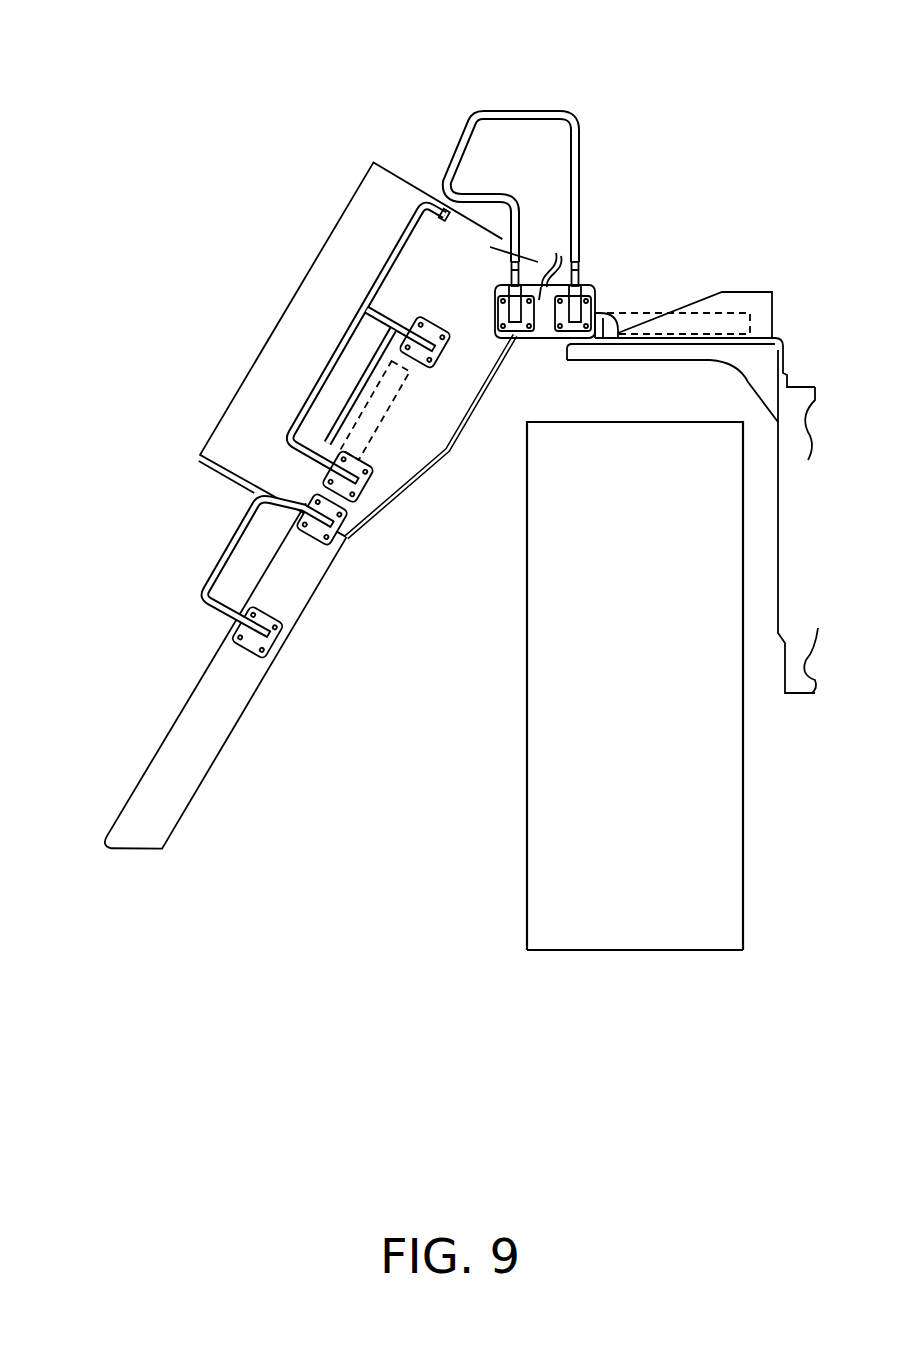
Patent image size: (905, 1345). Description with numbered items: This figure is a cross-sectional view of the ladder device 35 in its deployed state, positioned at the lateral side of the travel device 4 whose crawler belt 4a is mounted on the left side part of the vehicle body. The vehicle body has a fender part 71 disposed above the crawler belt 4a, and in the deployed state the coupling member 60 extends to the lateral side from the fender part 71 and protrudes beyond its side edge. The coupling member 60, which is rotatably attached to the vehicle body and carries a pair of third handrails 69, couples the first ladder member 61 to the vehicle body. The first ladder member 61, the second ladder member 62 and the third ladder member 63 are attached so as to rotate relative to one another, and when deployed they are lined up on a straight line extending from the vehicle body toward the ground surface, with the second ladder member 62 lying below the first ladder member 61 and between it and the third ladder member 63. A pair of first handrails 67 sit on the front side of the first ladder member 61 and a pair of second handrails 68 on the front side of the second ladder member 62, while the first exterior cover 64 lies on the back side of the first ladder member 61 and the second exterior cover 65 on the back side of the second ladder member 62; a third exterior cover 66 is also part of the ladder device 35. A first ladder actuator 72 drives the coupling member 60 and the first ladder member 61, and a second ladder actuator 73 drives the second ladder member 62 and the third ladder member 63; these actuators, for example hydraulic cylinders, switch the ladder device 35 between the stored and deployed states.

The travel device 4 is at (512, 797).
The crawler belt 4a is at (637, 928).
The ladder device 35 is at (165, 420).
The coupling member 60 is at (552, 260).
The first ladder member 61 is at (400, 355).
The second ladder member 62 is at (290, 582).
The third ladder member 63 is at (148, 812).
The first exterior cover 64 is at (432, 480).
The second exterior cover 65 is at (312, 600).
The third exterior cover 66 is at (532, 352).
The first handrails 67 is at (400, 241).
The second handrails 68 is at (240, 527).
The third handrails 69 is at (518, 115).
The fender part 71 is at (657, 355).
The first ladder actuator 72 is at (722, 337).
The second ladder actuator 73 is at (356, 412).